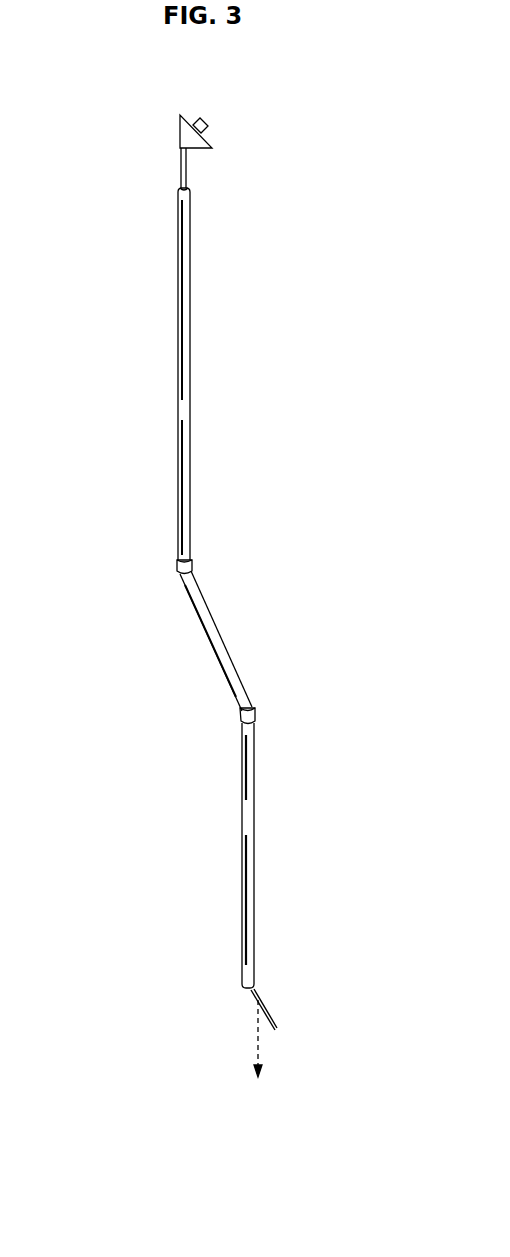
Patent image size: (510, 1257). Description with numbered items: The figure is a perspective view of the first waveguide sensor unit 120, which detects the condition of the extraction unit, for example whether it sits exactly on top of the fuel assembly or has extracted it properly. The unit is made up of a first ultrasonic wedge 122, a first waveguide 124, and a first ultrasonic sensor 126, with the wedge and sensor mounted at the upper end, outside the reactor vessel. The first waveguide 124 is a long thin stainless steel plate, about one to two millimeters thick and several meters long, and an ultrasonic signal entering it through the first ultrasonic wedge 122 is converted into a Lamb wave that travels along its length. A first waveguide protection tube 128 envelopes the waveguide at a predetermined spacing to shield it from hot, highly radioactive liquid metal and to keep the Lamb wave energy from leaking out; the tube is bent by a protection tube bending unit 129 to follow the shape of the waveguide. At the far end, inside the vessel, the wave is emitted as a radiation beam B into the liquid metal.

The first waveguide sensor unit 120 is at (222, 368).
The first ultrasonic wedge 122 is at (200, 148).
The first waveguide 124 is at (181, 167).
The first ultrasonic sensor 126 is at (207, 121).
The first waveguide protection tube 128 is at (178, 283).
The protection tube bending unit 129 is at (192, 566).
The radiation beam B is at (257, 1042).